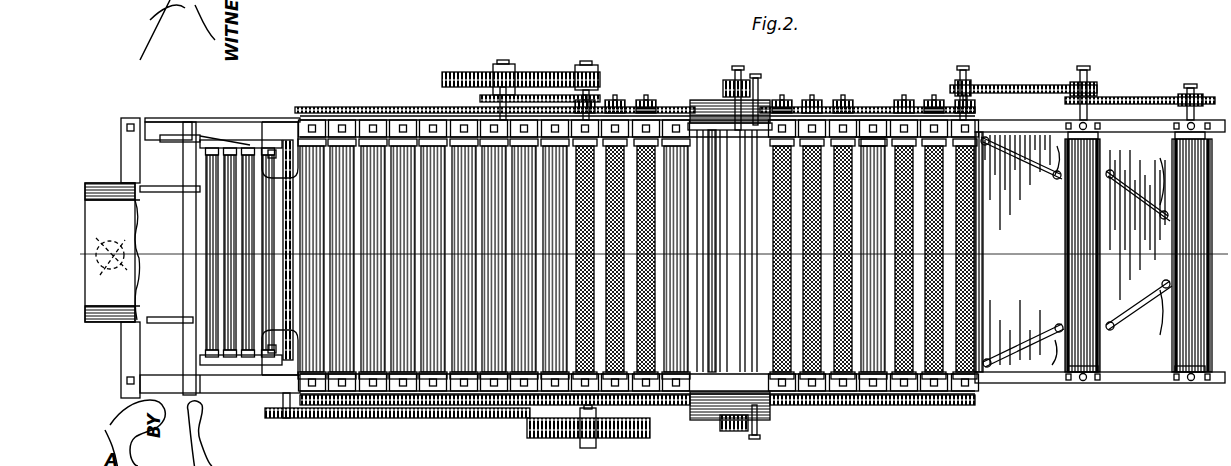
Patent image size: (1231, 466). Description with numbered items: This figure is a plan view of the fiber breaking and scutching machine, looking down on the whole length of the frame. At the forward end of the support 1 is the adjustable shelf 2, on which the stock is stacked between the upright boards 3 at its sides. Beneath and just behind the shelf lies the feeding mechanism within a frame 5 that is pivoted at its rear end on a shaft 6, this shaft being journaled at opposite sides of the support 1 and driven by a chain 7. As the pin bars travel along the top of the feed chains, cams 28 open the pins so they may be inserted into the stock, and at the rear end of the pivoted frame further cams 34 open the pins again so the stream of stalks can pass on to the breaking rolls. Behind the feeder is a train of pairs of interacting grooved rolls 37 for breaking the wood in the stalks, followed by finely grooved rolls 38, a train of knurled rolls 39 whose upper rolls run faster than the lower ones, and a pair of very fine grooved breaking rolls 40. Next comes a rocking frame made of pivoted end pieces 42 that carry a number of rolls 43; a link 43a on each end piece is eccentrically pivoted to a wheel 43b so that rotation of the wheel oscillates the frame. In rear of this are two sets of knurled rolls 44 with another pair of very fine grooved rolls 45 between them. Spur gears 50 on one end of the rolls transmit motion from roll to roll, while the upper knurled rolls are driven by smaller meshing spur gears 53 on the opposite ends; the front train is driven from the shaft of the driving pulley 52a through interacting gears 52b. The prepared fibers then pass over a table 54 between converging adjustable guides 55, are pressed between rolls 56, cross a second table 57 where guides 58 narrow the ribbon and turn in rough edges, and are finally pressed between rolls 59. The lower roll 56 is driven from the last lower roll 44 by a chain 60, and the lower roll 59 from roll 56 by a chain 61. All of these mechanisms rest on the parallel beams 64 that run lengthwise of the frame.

The support 1 is at (200, 395).
The adjustable shelf 2 is at (112, 252).
The upright boards 3 is at (118, 185).
The frame 5 is at (252, 145).
The shaft 6 is at (283, 405).
The chain 7 is at (310, 418).
The cams 28 is at (188, 160).
The cams 34 is at (266, 150).
The interacting grooved rolls 37 is at (312, 150).
The finely grooved rolls 38 is at (478, 130).
The knurled rolls 39 is at (761, 239).
The very fine grooved breaking rolls 40 is at (678, 130).
The pivoted end pieces 42 is at (745, 148).
The rolls 43 is at (760, 262).
The link 43a is at (758, 80).
The wheel 43b is at (738, 80).
The knurled rolls 44 is at (856, 120).
The very fine grooved rolls 45 is at (890, 146).
The spur gears 50 is at (348, 405).
The driving pulley 52a is at (640, 115).
The interacting gears 52b is at (585, 68).
The spur gears 53 is at (617, 100).
The table 54 is at (1060, 254).
The converging adjustable guides 55 is at (1052, 175).
The rolls 56 is at (1070, 283).
The second table 57 is at (1150, 305).
The guides 58 is at (1152, 170).
The rolls 59 is at (1180, 262).
The chain 60 is at (1025, 87).
The chain 61 is at (1135, 97).
The parallel beams 64 is at (1028, 383).